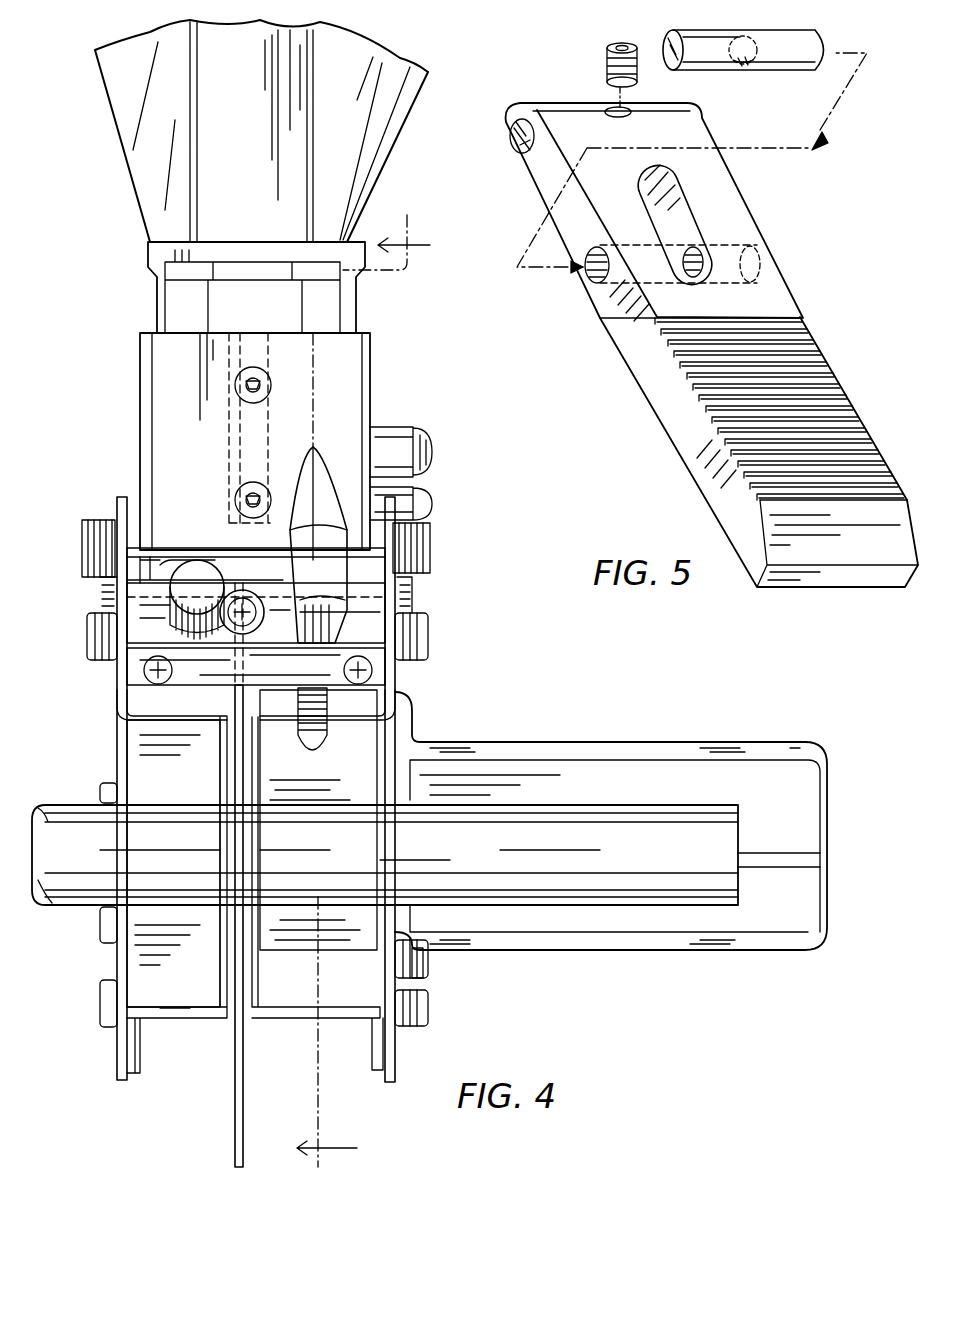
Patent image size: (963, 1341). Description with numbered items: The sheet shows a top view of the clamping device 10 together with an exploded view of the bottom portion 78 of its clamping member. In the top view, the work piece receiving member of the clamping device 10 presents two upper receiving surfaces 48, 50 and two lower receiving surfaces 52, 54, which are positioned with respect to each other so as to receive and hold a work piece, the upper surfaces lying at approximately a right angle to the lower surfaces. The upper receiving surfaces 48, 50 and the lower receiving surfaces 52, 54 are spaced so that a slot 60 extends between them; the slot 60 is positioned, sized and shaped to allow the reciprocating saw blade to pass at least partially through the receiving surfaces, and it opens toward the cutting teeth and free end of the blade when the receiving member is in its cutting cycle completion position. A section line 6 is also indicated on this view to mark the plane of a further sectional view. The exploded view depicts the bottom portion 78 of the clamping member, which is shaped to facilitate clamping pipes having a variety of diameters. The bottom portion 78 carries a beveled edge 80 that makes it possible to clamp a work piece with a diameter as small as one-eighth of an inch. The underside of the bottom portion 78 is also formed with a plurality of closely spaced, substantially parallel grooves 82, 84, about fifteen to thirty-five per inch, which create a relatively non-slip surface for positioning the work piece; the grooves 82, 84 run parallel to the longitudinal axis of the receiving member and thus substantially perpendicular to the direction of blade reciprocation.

In FIG. 4, the clamping device 10 is at (472, 749).
In FIG. 4, the upper receiving surface 48 is at (117, 763).
In FIG. 4, the upper receiving surface 50 is at (413, 783).
In FIG. 4, the lower receiving surface 52 is at (120, 958).
In FIG. 4, the lower receiving surface 54 is at (413, 990).
In FIG. 4, the slot 60 is at (227, 950).
In FIG. 4, the section line 6- 6 is at (374, 691).
In FIG. 5, the bottom portion 78 is at (787, 283).
In FIG. 5, the beveled edge 80 is at (865, 548).
In FIG. 5, the groove 82 is at (820, 360).
In FIG. 5, the groove 84 is at (853, 417).